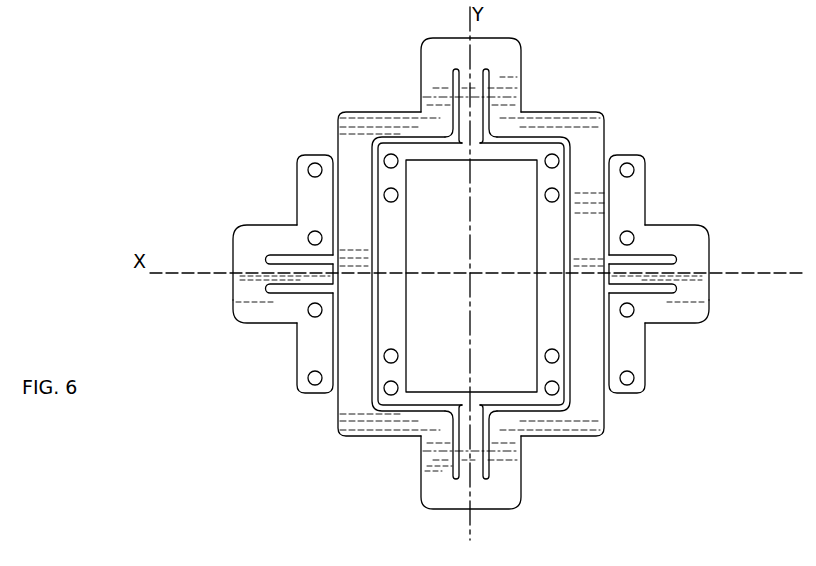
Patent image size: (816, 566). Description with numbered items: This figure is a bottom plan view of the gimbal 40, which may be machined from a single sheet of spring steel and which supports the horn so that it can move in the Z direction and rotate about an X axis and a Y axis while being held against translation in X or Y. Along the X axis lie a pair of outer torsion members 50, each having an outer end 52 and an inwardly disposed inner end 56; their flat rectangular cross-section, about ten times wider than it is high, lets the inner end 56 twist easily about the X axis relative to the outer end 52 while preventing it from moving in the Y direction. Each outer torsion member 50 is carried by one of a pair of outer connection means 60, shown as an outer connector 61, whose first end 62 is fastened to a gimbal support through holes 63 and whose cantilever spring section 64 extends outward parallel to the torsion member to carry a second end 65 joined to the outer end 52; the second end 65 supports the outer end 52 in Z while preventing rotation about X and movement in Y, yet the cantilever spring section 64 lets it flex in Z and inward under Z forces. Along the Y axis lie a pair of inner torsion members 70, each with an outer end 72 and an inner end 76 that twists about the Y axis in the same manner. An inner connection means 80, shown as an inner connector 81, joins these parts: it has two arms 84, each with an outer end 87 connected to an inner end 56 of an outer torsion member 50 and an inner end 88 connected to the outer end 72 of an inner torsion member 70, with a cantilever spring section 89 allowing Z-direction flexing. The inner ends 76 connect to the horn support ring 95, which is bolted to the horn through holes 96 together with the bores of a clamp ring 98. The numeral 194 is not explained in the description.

The gimbal 40 is at (213, 395).
The outer torsion member 50 is at (288, 270).
The outer end 52 is at (257, 273).
The inner end 56 is at (340, 286).
The outer connection means 60 is at (230, 366).
The outer connector 61 is at (266, 325).
The first end 62 is at (315, 154).
The holes 63 is at (314, 235).
The cantilever spring section 64 is at (243, 186).
The second end 65 is at (250, 238).
The inner torsion member 70 is at (488, 107).
The outer end 72 is at (472, 68).
The inner end 76 is at (485, 133).
The inner connection means 80 is at (403, 42).
The inner connector 81 is at (368, 112).
The arm 84 is at (403, 112).
The outer end 87 is at (352, 267).
The inner end 88 is at (447, 55).
The cantilever spring section 89 is at (422, 77).
The horn support ring 95 is at (395, 220).
The holes 96 is at (552, 195).
The clamp ring 98 is at (432, 466).
The reference 194 is at (613, 557).